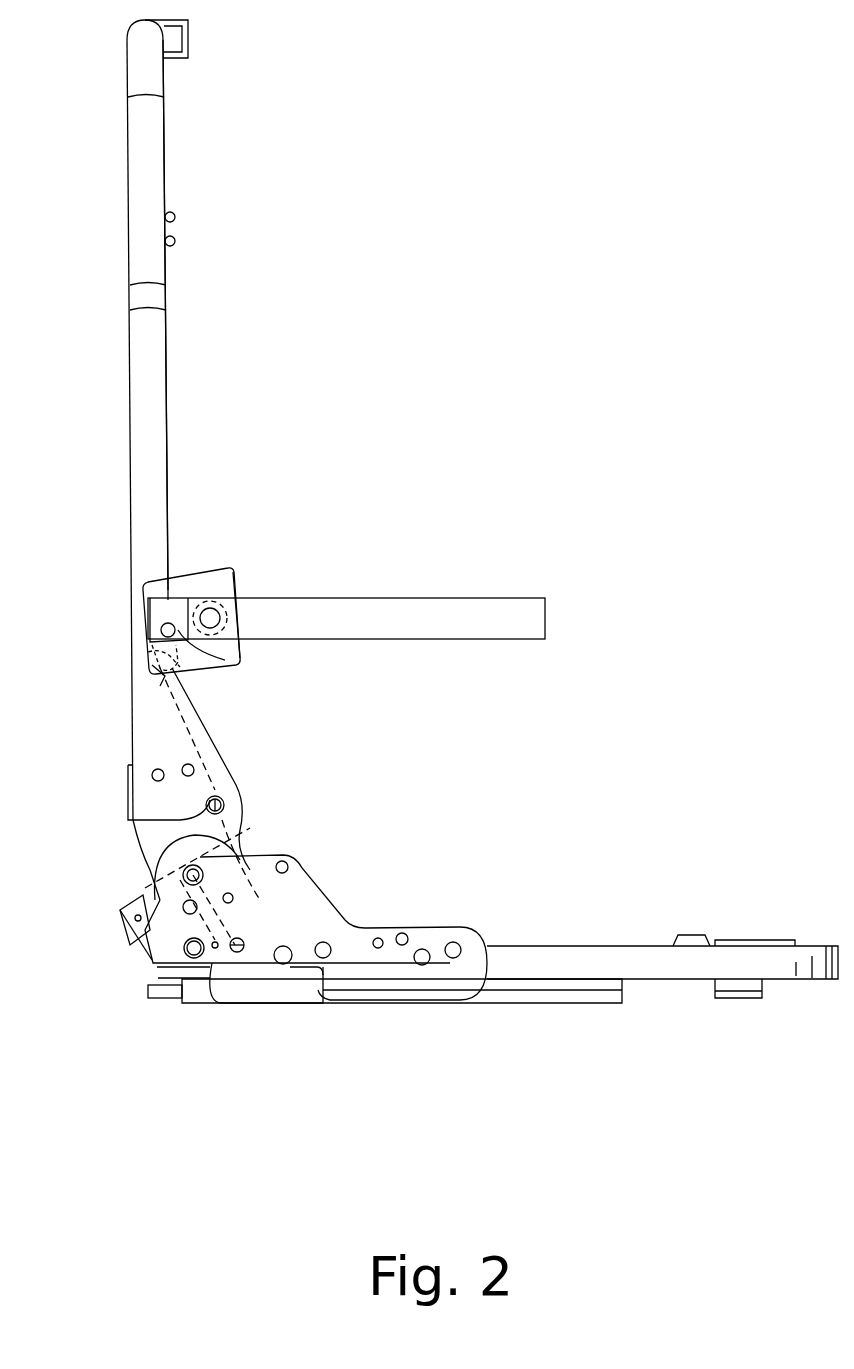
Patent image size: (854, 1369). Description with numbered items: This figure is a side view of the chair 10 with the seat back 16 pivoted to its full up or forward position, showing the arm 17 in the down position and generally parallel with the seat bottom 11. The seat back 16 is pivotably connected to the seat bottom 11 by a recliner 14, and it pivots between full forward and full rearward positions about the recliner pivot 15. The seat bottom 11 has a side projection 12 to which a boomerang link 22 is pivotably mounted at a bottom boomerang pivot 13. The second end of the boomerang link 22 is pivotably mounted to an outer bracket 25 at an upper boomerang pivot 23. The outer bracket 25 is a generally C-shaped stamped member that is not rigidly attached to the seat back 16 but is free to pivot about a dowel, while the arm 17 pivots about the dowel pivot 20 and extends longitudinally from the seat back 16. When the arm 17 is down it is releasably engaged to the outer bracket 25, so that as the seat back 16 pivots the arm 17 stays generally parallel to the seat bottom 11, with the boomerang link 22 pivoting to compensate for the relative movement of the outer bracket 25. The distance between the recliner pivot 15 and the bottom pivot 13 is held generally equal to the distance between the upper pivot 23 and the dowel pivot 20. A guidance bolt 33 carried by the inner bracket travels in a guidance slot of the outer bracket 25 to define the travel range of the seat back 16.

The chair 10 is at (262, 462).
The seat bottom 11 is at (568, 965).
The side projection 12 is at (140, 946).
The bottom boomerang pivot 13 is at (135, 921).
The recliner 14 is at (372, 985).
The recliner pivot 15 is at (152, 963).
The seat back 16 is at (125, 257).
The arm 17 is at (487, 607).
The dowel pivot 20 is at (213, 620).
The boomerang link 22 is at (218, 758).
The upper boomerang pivot 23 is at (152, 680).
The outer bracket 25 is at (210, 572).
The guidance bolt 33 is at (150, 618).